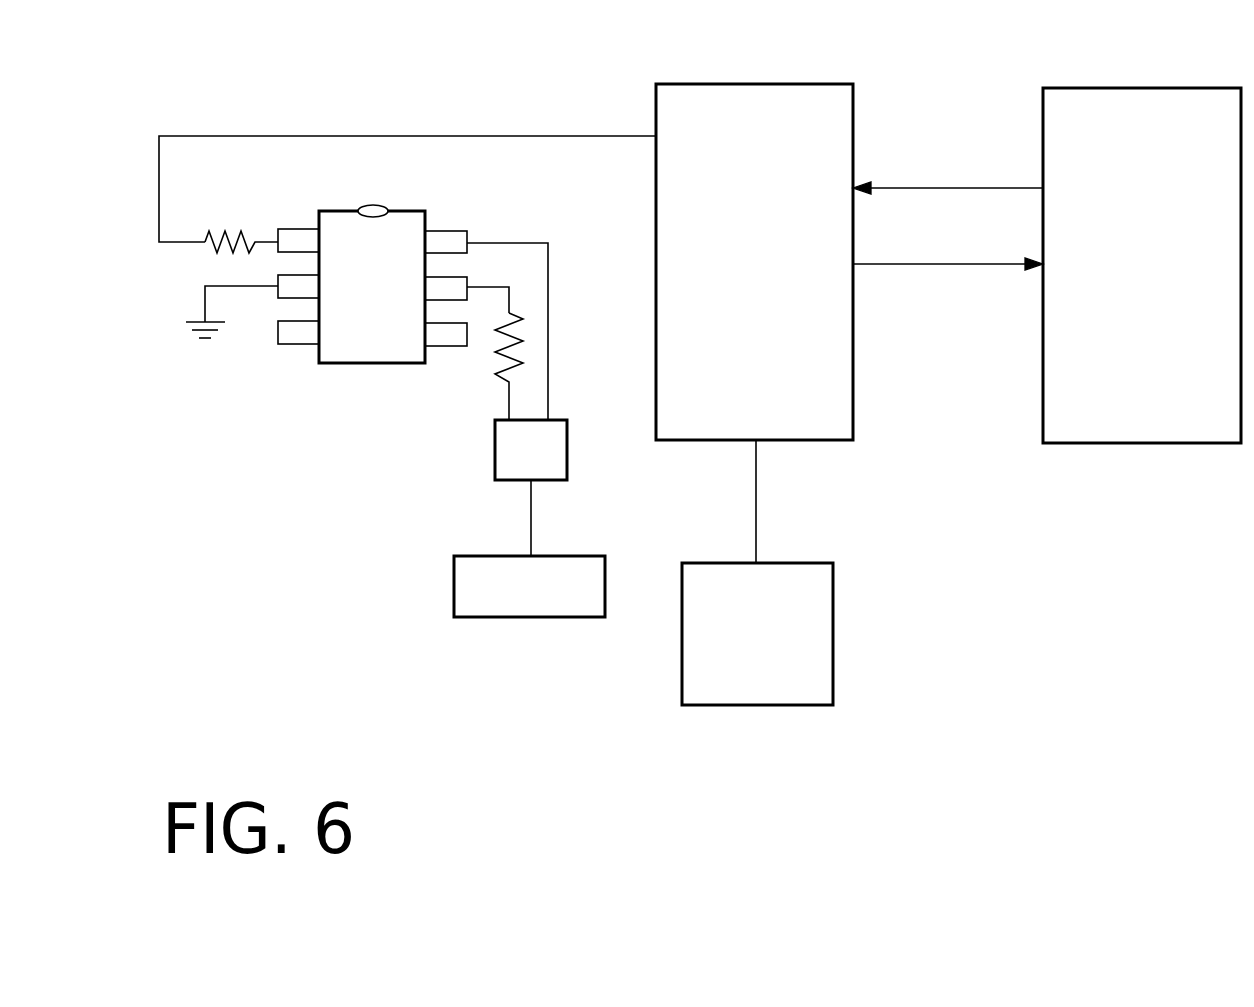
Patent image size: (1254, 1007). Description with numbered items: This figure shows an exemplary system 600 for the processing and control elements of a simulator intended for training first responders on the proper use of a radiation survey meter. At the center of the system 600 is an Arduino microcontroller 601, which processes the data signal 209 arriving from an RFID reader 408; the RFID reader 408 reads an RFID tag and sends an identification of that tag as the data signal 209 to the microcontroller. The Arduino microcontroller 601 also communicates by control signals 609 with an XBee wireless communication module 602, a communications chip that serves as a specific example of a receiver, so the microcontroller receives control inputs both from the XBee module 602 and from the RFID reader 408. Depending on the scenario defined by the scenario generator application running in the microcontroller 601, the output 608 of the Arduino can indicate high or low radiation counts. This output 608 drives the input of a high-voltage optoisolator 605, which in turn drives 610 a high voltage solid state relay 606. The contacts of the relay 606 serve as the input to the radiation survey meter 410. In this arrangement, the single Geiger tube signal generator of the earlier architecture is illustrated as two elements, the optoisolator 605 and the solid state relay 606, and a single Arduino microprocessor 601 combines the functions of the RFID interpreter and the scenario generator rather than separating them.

The system 600 is at (700, 383).
The Arduino microcontroller 601 is at (754, 242).
The XBee wireless communication module 602 is at (1142, 244).
The high-voltage optoisolator 605 is at (372, 268).
The high voltage solid state relay 606 is at (531, 450).
The output of the Arduino microprocessor 608 is at (407, 175).
The control signals 609 is at (948, 175).
The drive from optoisolator to relay 610 is at (533, 331).
The radiation survey meter 410 is at (516, 548).
The RFID reader 408 is at (757, 617).
The data signal 209 is at (782, 501).